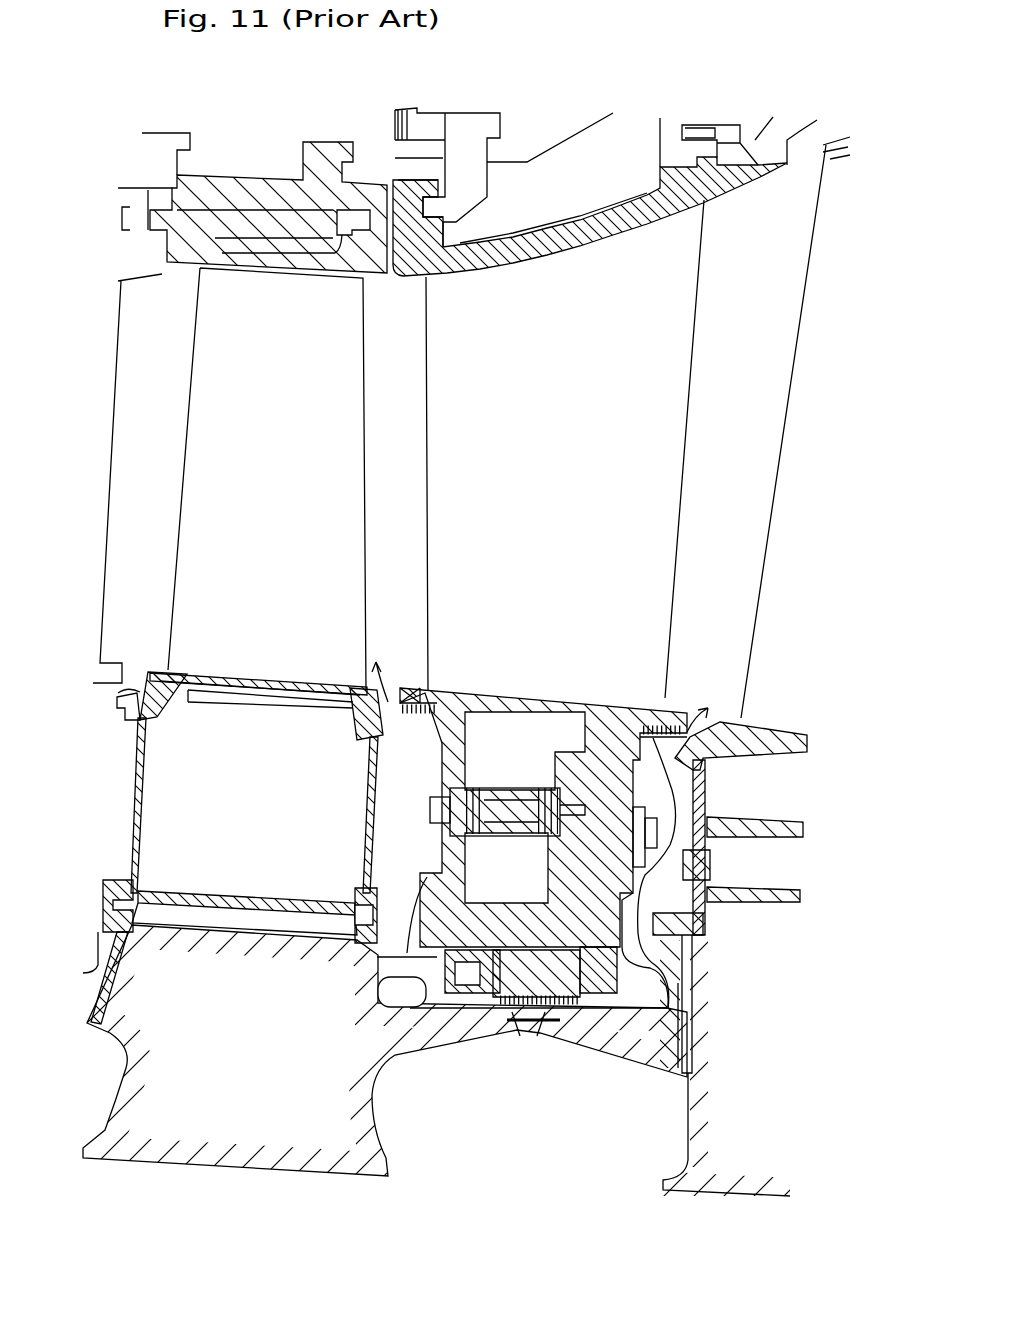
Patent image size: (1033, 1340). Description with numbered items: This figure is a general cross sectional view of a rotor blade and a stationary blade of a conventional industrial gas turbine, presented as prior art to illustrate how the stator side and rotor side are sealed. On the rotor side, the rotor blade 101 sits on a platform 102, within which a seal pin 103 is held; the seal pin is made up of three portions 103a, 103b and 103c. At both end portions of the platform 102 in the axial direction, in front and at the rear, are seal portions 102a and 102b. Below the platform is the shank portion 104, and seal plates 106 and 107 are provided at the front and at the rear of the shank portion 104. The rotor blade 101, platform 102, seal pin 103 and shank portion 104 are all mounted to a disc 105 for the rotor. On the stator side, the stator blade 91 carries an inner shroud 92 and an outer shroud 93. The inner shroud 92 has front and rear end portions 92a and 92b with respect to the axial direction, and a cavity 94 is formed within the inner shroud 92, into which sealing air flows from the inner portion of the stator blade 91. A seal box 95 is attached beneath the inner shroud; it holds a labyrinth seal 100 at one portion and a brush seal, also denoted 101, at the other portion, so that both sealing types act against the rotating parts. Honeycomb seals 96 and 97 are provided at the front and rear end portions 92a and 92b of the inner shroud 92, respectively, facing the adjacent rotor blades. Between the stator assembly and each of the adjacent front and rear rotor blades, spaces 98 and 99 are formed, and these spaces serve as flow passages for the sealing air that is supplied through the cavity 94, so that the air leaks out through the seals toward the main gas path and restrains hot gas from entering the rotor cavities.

The stator blade 91 is at (658, 395).
The inner shroud 92 is at (546, 797).
The front end portion of inner shroud 92a is at (412, 688).
The rear end portion of inner shroud 92b is at (687, 700).
The outer shroud 93 is at (522, 228).
The cavity 94 is at (516, 752).
The seal box 95 is at (467, 1045).
The honeycomb seal 96 is at (430, 688).
The honeycomb seal 97 is at (653, 698).
The space 98 is at (694, 972).
The space 99 is at (400, 1025).
The labyrinth seal 100 is at (553, 1020).
The rotor blade 101 is at (240, 452).
The platform 102 is at (241, 791).
The seal portion 102a is at (125, 725).
The seal portion 102b is at (378, 768).
The seal pin 103 is at (214, 690).
The seal pin portion 103a is at (260, 674).
The seal pin portion 103b is at (128, 704).
The seal pin portion 103c is at (352, 679).
The shank portion 104 is at (258, 770).
The disc 105 is at (330, 1030).
The seal plate 106 is at (136, 853).
The seal plate 107 is at (372, 812).